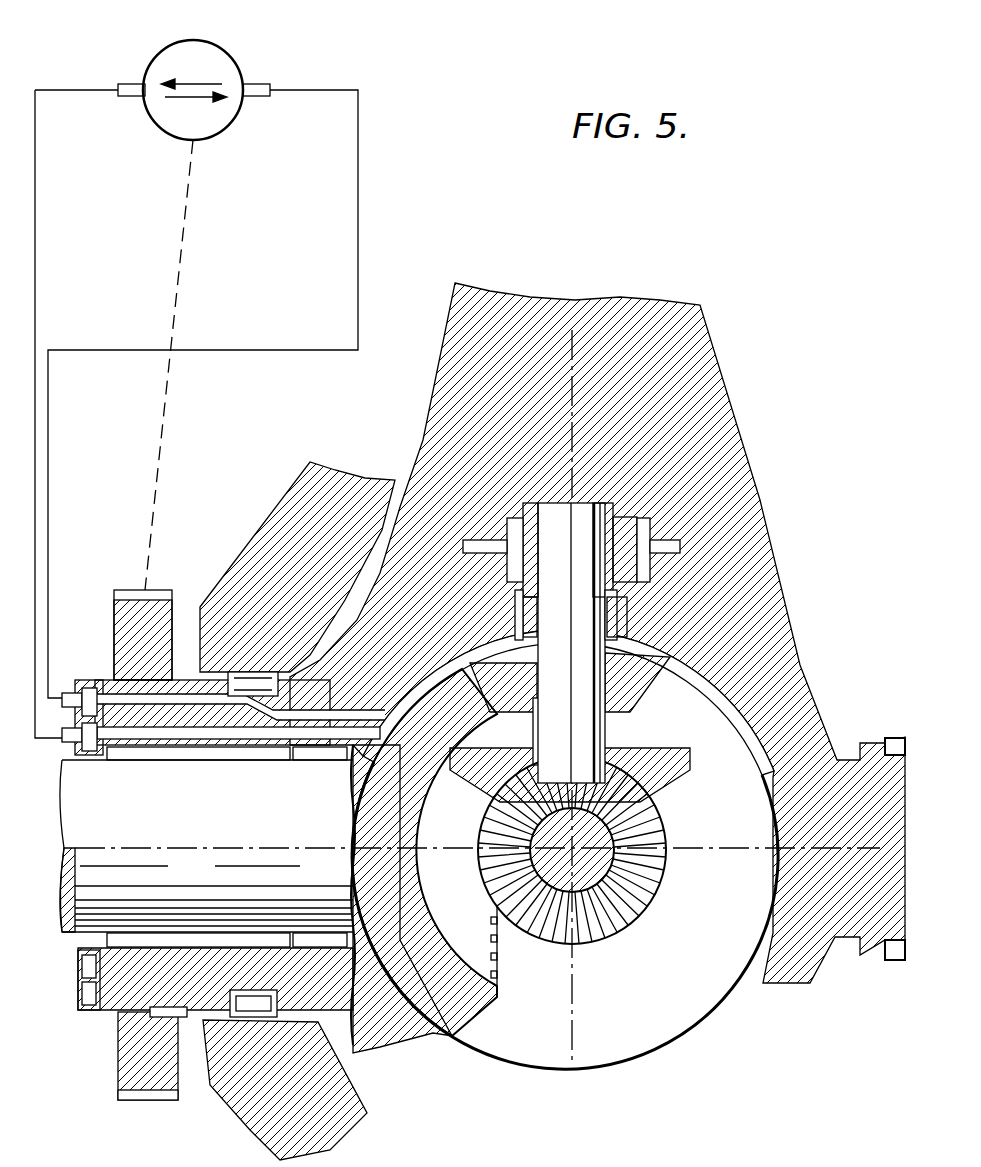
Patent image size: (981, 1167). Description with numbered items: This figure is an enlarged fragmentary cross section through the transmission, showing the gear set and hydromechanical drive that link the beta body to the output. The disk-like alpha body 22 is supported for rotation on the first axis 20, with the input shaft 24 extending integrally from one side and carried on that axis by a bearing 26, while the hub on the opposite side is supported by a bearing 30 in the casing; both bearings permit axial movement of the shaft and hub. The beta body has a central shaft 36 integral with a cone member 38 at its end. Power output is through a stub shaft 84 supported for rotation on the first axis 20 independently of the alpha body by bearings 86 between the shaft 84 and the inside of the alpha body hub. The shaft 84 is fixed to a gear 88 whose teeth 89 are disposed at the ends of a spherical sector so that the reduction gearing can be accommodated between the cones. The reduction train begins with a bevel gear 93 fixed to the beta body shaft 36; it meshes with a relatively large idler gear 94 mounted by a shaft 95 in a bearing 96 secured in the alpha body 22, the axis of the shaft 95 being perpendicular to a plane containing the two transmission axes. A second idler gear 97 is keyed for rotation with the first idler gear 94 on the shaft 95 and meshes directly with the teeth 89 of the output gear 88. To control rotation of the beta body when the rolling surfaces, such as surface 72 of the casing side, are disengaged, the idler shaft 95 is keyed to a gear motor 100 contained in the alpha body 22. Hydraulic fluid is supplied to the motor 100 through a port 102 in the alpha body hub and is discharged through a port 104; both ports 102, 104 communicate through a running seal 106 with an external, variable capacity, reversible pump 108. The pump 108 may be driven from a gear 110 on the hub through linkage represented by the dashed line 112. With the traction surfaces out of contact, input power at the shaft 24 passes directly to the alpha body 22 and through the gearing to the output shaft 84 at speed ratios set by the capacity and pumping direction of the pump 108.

The first axis 20 is at (752, 850).
The alpha body 22 is at (715, 424).
The input shaft 24 is at (848, 935).
The bearing 26 is at (893, 737).
The bearing 30 is at (240, 720).
The central shaft 36 is at (645, 900).
The cone member 38 is at (654, 986).
The housing wall 72 is at (275, 542).
The stub shaft 84 is at (207, 875).
The bearings 86 is at (310, 752).
The gear 88 is at (375, 880).
The teeth 89 is at (487, 1017).
The bevel gear 93 is at (511, 951).
The idler gear 94 is at (670, 785).
The shaft 95 is at (590, 727).
The bearing 96 is at (618, 620).
The second idler gear 97 is at (655, 690).
The gear motor 100 is at (510, 580).
The port 102 is at (110, 690).
The port 104 is at (125, 737).
The running seal 106 is at (78, 965).
The reversible pump 108 is at (236, 62).
The gear 110 is at (140, 596).
The dashed line 112 is at (160, 450).